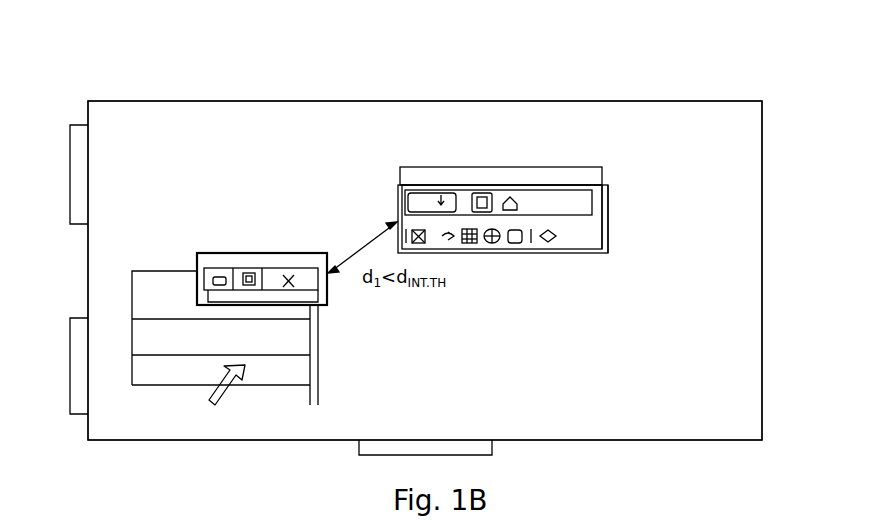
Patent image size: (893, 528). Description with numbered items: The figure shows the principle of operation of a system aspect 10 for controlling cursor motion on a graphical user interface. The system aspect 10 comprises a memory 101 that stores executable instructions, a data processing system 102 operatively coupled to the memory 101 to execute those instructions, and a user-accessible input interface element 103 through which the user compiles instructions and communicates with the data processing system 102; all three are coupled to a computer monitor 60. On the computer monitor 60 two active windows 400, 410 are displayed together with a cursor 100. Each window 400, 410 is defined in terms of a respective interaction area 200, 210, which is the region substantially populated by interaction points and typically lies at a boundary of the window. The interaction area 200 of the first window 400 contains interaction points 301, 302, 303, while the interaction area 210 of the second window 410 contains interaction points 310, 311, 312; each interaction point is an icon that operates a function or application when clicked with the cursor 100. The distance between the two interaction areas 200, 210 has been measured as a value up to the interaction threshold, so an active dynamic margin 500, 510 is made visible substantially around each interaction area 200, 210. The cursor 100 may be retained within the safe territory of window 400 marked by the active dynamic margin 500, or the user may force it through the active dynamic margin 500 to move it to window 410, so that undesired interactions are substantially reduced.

The system aspect 10 is at (733, 79).
The computer monitor 60 is at (763, 268).
The memory 101 is at (80, 204).
The data processing system 102 is at (80, 386).
The user-accessible input interface element 103 is at (478, 455).
The cursor 100 is at (232, 394).
The interaction area 200 is at (198, 254).
The interaction point 301 is at (288, 271).
The interaction point 302 is at (248, 271).
The interaction point 303 is at (197, 272).
The window 400 is at (136, 374).
The active dynamic margin 500 is at (326, 306).
The interaction area 210 is at (608, 229).
The interaction point 310 is at (397, 185).
The interaction point 311 is at (482, 196).
The interaction point 312 is at (572, 195).
The active dynamic margin 510 is at (610, 213).
The window 410 is at (608, 242).